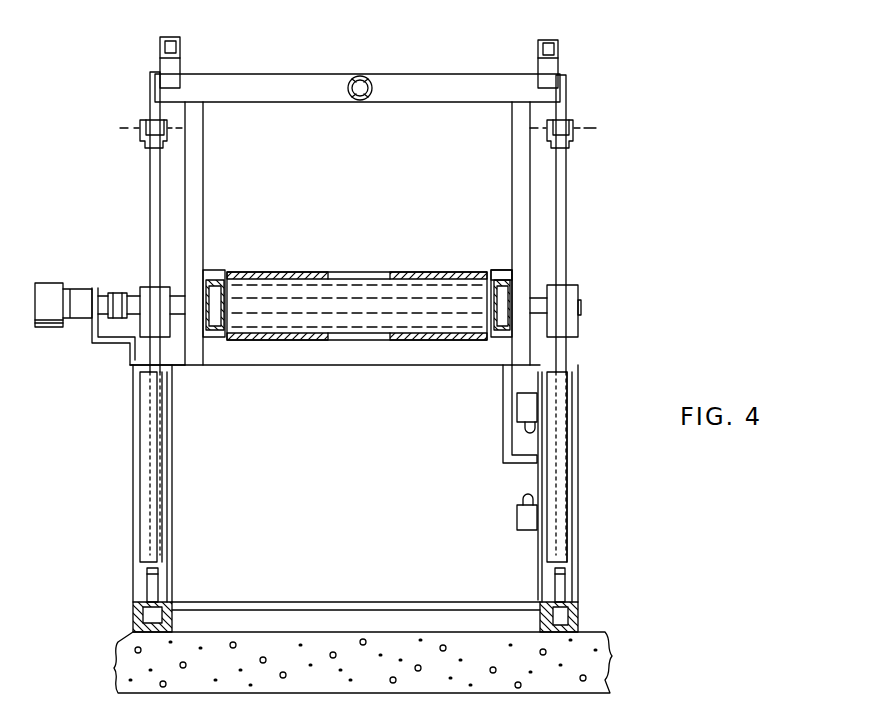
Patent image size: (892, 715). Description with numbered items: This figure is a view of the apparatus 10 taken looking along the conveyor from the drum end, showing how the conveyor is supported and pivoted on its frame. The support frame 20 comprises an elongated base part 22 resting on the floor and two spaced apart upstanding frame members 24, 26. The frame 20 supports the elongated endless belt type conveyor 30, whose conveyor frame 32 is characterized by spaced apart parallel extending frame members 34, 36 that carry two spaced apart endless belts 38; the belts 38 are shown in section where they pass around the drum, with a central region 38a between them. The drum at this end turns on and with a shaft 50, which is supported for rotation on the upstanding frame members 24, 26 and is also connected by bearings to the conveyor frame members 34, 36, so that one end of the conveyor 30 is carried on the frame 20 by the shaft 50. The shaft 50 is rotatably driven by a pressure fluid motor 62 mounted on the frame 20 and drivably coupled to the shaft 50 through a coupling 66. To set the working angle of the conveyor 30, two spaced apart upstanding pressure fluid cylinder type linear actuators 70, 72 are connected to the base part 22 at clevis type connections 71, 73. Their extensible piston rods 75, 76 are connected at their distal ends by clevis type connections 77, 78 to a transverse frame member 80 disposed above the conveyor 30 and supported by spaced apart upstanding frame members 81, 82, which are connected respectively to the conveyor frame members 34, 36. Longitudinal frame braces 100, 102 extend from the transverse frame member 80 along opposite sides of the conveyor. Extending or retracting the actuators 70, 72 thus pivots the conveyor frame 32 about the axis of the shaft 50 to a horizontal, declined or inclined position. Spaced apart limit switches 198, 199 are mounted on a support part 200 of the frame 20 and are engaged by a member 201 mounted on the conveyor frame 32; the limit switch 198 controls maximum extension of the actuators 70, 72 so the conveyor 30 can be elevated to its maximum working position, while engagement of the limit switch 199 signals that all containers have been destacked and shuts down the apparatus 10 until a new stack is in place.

The apparatus 10 is at (594, 96).
The support frame 20 is at (131, 588).
The elongated base part 22 is at (578, 612).
The upstanding frame member 24 is at (133, 456).
The upstanding frame member 26 is at (578, 390).
The endless belt type conveyor 30 is at (357, 324).
The conveyor frame 32 is at (503, 266).
The frame member 34 is at (210, 340).
The frame member 36 is at (515, 345).
The endless belts 38 is at (248, 272).
The roller central gap 38a is at (392, 272).
The shaft 50 is at (132, 322).
The pressure fluid motor 62 is at (52, 283).
The coupling 66 is at (115, 293).
The linear actuator 70 is at (145, 410).
The clevis type connection 71 is at (160, 585).
The linear actuator 72 is at (560, 455).
The clevis type connection 73 is at (545, 583).
The piston rod 75 is at (162, 190).
The piston rod 76 is at (567, 178).
The clevis type connection 77 is at (148, 118).
The clevis type connection 78 is at (588, 120).
The transverse frame member 80 is at (214, 74).
The upstanding frame member 81 is at (203, 146).
The upstanding frame member 82 is at (512, 142).
The longitudinal frame brace 100 is at (175, 37).
The longitudinal frame brace 102 is at (546, 40).
The limit switch 198 is at (535, 408).
The limit switch 199 is at (530, 522).
The support part 200 is at (537, 480).
The member 201 is at (503, 408).